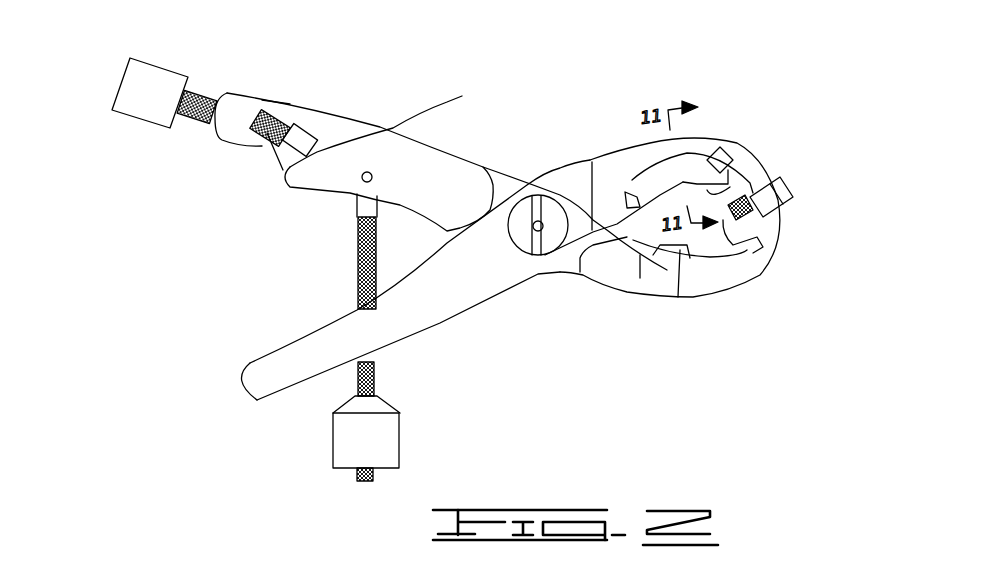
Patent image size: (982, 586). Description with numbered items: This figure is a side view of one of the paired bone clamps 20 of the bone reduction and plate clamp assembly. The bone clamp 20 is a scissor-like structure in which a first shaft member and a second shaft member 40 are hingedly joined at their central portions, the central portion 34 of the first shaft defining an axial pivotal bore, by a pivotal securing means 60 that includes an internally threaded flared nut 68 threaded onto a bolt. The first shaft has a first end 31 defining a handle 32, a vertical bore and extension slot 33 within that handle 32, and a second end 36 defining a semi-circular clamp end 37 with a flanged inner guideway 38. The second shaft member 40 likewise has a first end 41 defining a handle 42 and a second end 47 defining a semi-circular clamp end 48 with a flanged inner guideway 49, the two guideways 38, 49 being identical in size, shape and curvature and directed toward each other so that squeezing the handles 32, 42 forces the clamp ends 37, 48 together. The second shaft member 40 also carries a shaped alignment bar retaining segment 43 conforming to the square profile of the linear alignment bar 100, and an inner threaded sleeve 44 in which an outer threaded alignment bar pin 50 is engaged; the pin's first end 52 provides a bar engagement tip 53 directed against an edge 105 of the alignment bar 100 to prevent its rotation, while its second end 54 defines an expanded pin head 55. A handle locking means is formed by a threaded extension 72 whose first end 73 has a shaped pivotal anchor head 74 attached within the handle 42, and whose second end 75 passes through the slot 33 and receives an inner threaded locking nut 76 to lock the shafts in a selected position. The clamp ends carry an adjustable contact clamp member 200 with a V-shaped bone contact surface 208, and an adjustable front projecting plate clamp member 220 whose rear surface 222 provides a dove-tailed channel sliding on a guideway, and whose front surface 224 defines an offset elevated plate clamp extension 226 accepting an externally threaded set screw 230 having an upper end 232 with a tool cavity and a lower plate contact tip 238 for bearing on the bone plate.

The bone clamp 20 is at (735, 83).
The first end 31 is at (400, 343).
The handle 32 is at (267, 373).
The vertical bore and extension slot 33 is at (377, 373).
The central portion 34 is at (580, 280).
The second end 36 is at (605, 156).
The semi-circular clamp end 37 is at (687, 150).
The flanged inner guideway 38 is at (627, 190).
The second shaft member 40 is at (483, 167).
The first end 41 is at (462, 157).
The handle 42 is at (456, 98).
The shaped alignment bar retaining segment 43 is at (450, 155).
The inner threaded sleeve 44 is at (273, 112).
The second end 47 is at (590, 300).
The semi-circular clamp end 48 is at (703, 298).
The flanged inner guideway 49 is at (637, 290).
The outer threaded alignment bar pin 50 is at (207, 93).
The first end 52 is at (285, 120).
The bar engagement tip 53 is at (287, 165).
The second end 54 is at (197, 93).
The expanded pin head 55 is at (143, 100).
The pivotal securing means 60 is at (553, 240).
The internally threaded flared nut 68 is at (533, 195).
The threaded extension 72 is at (357, 290).
The first end 73 is at (377, 230).
The shaped pivotal anchor head 74 is at (353, 212).
The second end 75 is at (367, 481).
The inner threaded locking nut 76 is at (387, 430).
The linear alignment bar 100 is at (285, 130).
The edge 105 is at (300, 107).
The adjustable contact clamp member 200 is at (760, 280).
The V-shaped bone contact surface 208 is at (680, 282).
The adjustable front projecting plate clamp member 220 is at (733, 157).
The rear surface 222 is at (727, 147).
The front surface 224 is at (773, 180).
The offset elevated plate clamp extension 226 is at (780, 190).
The externally threaded set screw 230 is at (757, 233).
The upper end 232 is at (787, 203).
The plate contact tip 238 is at (755, 258).